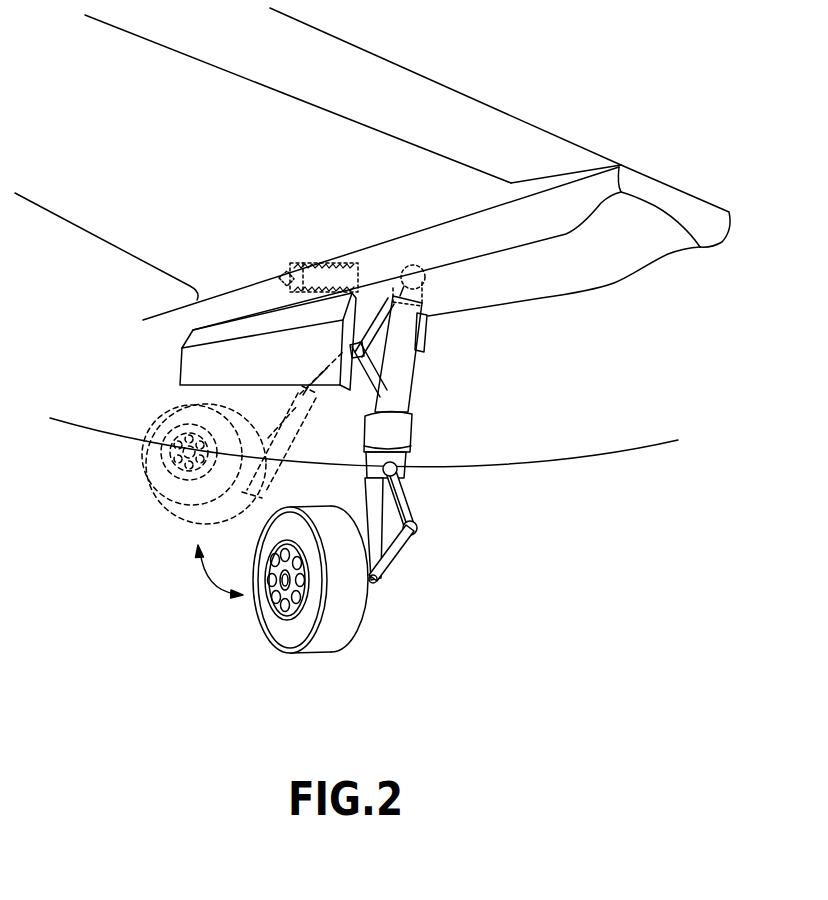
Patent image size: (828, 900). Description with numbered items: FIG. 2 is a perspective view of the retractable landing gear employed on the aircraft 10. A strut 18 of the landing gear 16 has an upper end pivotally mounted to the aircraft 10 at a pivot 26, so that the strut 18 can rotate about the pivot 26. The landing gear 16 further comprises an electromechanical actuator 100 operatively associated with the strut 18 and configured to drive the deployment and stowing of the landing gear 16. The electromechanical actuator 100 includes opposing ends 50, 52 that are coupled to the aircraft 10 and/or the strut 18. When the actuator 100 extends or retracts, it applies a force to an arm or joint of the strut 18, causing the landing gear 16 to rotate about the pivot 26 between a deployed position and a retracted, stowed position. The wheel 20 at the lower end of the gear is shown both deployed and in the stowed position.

The aircraft 10 is at (625, 433).
The landing gear 16 is at (505, 563).
The strut 18 is at (407, 392).
The wheel 20 is at (291, 613).
The pivot 26 is at (423, 287).
The end 50 is at (281, 277).
The end 52 is at (373, 266).
The electromechanical actuator 100 is at (322, 264).